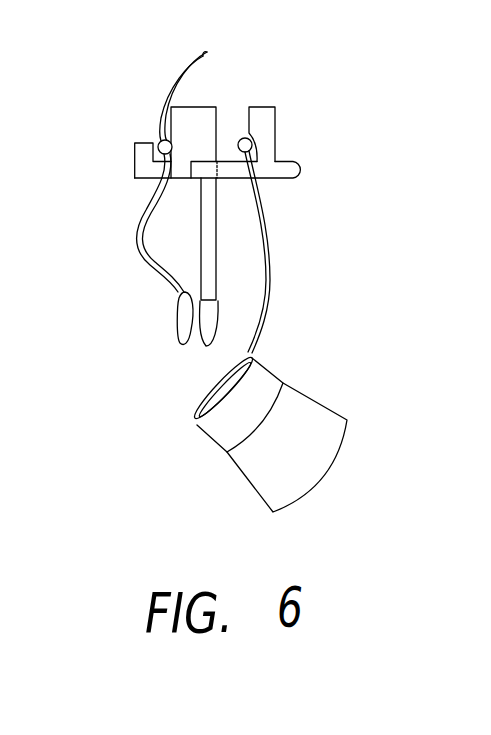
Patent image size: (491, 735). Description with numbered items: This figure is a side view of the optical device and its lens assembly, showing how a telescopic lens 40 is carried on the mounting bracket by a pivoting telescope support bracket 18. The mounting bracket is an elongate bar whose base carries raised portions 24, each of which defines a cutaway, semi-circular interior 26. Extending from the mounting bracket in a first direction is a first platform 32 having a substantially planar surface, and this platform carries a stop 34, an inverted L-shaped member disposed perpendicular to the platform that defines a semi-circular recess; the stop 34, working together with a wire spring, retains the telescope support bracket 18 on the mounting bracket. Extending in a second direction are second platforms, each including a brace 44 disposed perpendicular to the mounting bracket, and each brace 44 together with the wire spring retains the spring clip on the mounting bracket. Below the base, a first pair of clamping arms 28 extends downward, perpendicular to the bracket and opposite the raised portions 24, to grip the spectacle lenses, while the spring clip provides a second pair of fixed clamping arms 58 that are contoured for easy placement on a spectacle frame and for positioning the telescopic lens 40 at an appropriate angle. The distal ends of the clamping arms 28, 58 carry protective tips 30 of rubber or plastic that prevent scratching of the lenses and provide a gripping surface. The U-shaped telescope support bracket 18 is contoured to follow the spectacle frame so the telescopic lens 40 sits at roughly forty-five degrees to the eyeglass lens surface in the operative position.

The telescope support bracket 18 is at (278, 336).
The raised portions 24 is at (208, 107).
The interior 26 is at (162, 92).
The first pair of clamping arms 28 is at (215, 247).
The protective tips 30 is at (178, 313).
The first platform 32 is at (281, 180).
The stop 34 is at (275, 123).
The telescopic lens 40 is at (320, 473).
The brace 44 is at (133, 157).
The second pair of fixed clamping arms 58 is at (135, 232).